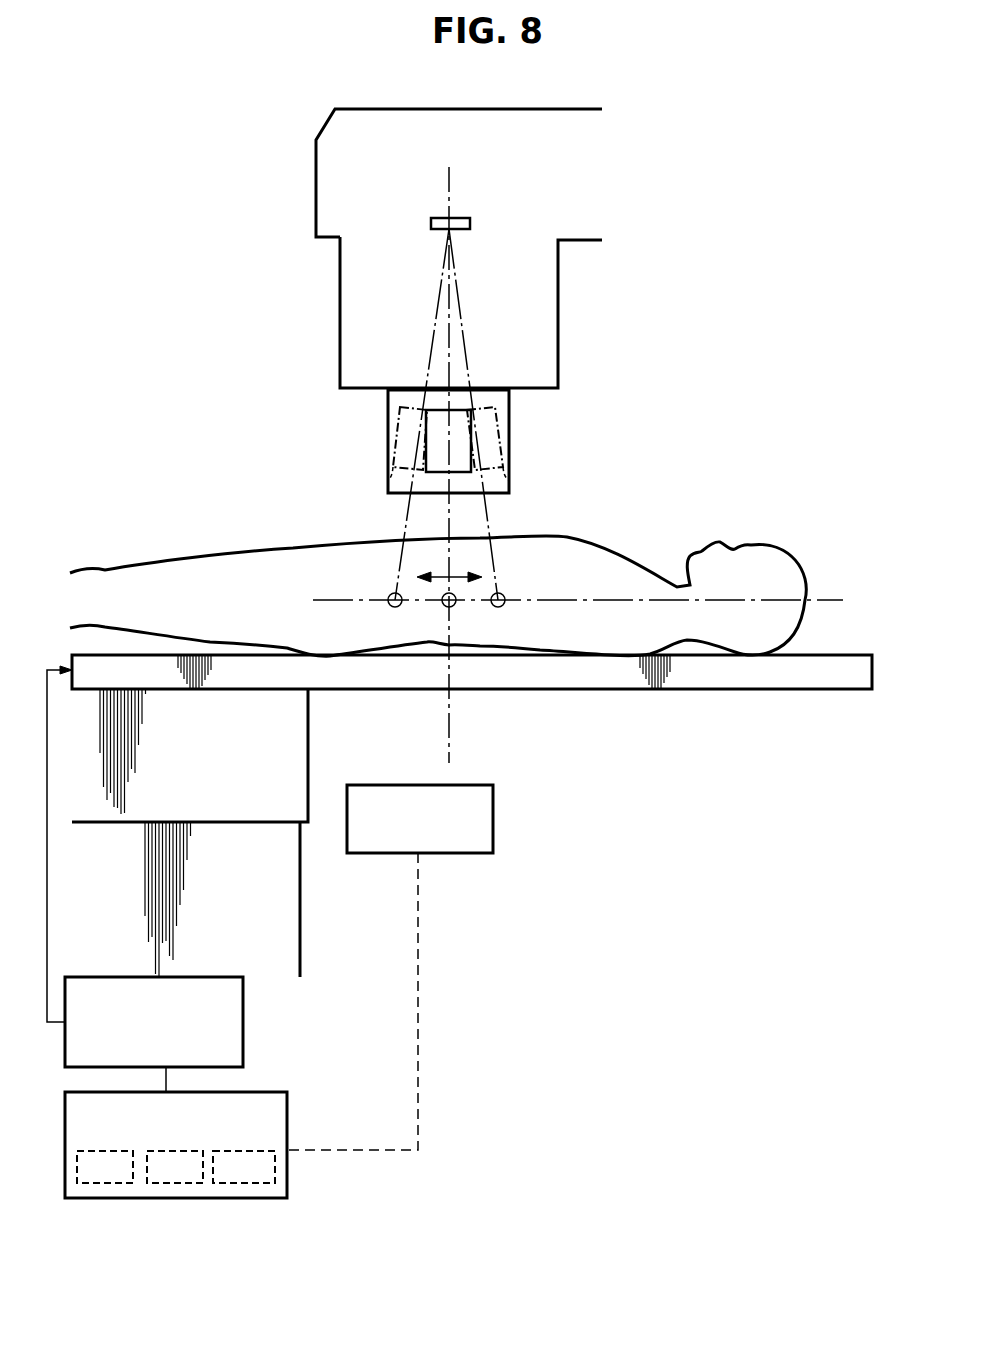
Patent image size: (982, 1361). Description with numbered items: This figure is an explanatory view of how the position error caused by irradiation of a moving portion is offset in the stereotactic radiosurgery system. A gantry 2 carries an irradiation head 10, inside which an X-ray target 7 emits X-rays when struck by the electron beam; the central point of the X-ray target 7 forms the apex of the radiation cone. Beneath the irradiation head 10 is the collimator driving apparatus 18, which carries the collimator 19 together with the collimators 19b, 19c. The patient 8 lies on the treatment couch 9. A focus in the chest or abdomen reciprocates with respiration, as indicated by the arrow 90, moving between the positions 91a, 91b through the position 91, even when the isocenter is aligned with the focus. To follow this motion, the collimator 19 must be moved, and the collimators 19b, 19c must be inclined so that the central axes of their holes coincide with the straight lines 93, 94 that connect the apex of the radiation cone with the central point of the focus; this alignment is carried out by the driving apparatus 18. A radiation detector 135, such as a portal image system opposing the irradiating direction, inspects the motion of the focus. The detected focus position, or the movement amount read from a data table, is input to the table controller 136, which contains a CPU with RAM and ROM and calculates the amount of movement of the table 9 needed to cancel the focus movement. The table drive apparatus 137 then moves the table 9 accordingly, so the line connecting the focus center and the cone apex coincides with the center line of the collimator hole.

The gantry 2 is at (316, 168).
The irradiation head 10 is at (340, 308).
The X-ray target 7 is at (470, 220).
The collimator driving apparatus 18 is at (509, 420).
The collimator 19 is at (444, 471).
The collimator 19b is at (508, 478).
The collimator 19c is at (388, 480).
The straight line 93 is at (489, 520).
The straight line 94 is at (407, 517).
The patient 8 is at (605, 558).
The arrow 90 is at (459, 570).
The focus position 91 is at (452, 607).
The focus position 91a is at (500, 608).
The focus position 91b is at (388, 606).
The treatment couch 9 is at (815, 688).
The radiation detector 135 is at (493, 820).
The table controller 136 is at (287, 1108).
The table drive apparatus 137 is at (243, 1022).